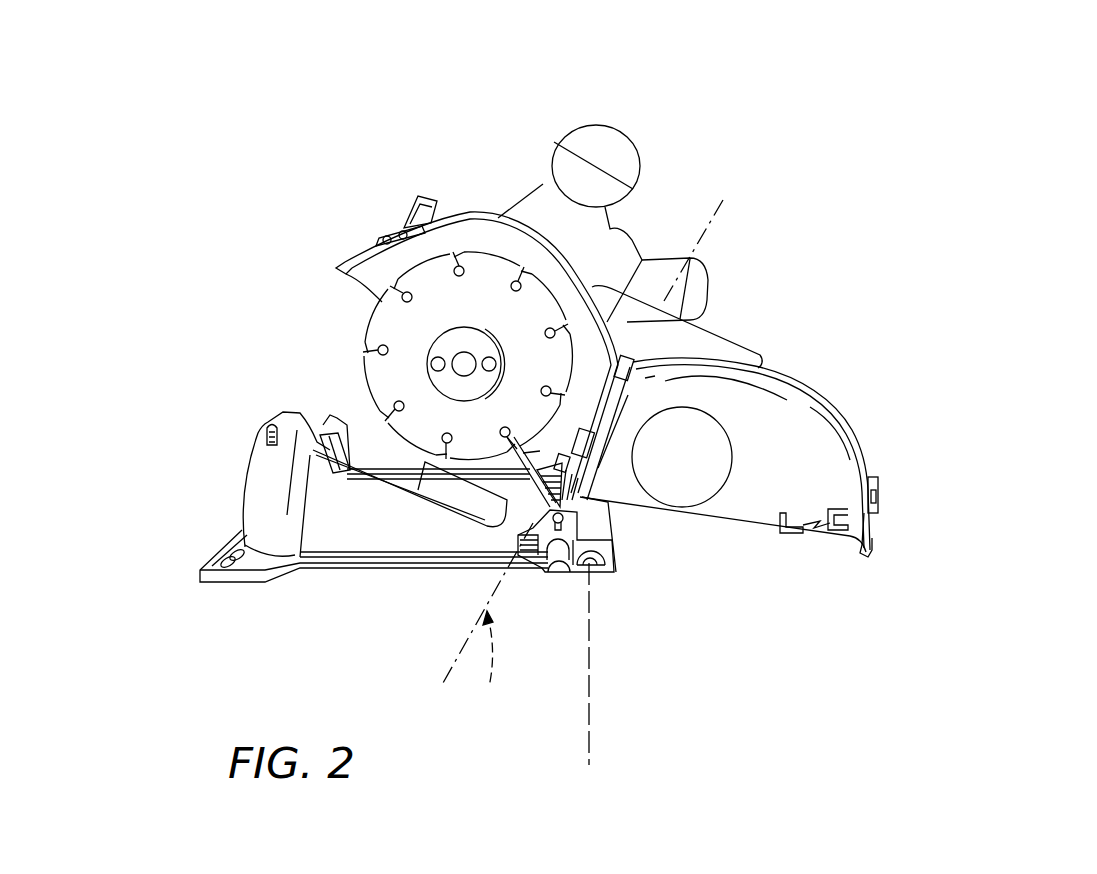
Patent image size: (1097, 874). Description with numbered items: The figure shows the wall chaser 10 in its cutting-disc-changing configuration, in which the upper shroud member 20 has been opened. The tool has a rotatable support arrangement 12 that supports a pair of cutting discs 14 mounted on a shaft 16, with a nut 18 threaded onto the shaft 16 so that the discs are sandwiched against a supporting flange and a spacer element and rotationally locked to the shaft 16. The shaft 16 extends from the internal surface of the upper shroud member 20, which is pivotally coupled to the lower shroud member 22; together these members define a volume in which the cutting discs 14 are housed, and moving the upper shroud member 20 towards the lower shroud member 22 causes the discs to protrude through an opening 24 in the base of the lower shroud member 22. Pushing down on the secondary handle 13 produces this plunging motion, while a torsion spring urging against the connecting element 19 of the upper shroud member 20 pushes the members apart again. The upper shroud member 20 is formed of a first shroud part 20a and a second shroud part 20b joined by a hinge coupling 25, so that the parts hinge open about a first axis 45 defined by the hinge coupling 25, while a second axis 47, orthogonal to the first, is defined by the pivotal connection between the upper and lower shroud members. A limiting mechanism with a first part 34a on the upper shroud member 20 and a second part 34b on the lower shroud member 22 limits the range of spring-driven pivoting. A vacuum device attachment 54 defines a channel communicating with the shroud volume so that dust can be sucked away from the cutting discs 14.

The wall chaser 10 is at (150, 421).
The rotatable support arrangement 12 is at (402, 369).
The secondary handle 13 is at (606, 152).
The cutting discs 14 is at (383, 318).
The shaft 16 is at (460, 360).
The nut 18 is at (472, 340).
The connecting element 19 is at (580, 507).
The upper shroud member 20 is at (687, 288).
The first shroud part 20a is at (345, 264).
The second shroud part 20b is at (832, 420).
The lower shroud member 22 is at (288, 515).
The opening 24 is at (359, 596).
The hinge coupling 25 is at (631, 357).
The first part of the limiting mechanism 34a is at (852, 488).
The second part of the limiting mechanism 34b is at (260, 437).
The first axis 45 is at (488, 626).
The second axis 47 is at (590, 670).
The vacuum device attachment 54 is at (700, 270).